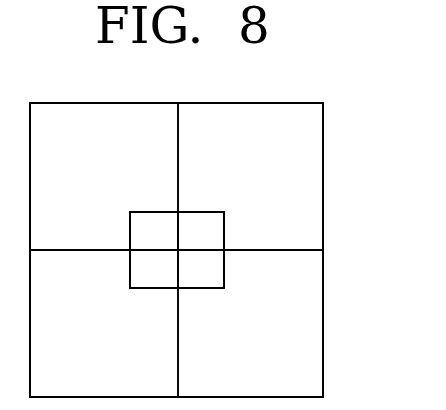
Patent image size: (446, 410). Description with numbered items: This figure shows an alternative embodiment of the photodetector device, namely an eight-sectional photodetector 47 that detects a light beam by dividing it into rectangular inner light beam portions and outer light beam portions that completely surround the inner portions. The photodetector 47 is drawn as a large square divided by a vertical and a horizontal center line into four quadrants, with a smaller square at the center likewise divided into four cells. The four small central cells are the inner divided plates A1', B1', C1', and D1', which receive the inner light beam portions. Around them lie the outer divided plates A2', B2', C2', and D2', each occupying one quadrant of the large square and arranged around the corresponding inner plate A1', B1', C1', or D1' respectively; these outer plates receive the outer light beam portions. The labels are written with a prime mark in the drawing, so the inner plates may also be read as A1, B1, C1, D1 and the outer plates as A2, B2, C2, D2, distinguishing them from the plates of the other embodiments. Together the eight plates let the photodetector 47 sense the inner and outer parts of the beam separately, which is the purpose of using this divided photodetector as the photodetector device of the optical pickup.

The 8-sectional photodetector 47 is at (323, 190).
The inner divided plate A1' is at (154, 231).
The inner divided plate B1' is at (154, 269).
The inner divided plate C1' is at (201, 269).
The inner divided plate D1' is at (201, 231).
The outer divided plate A2' is at (104, 176).
The outer divided plate B2' is at (104, 323).
The outer divided plate C2' is at (250, 323).
The outer divided plate D2' is at (250, 176).
The block A1' A1 is at (154, 231).
The block B1' B1 is at (154, 269).
The block C1' C1 is at (201, 269).
The block D1' D1 is at (201, 231).
The block A2' A2 is at (104, 176).
The block B2' B2 is at (104, 323).
The block C2' C2 is at (250, 323).
The block D2' D2 is at (250, 176).